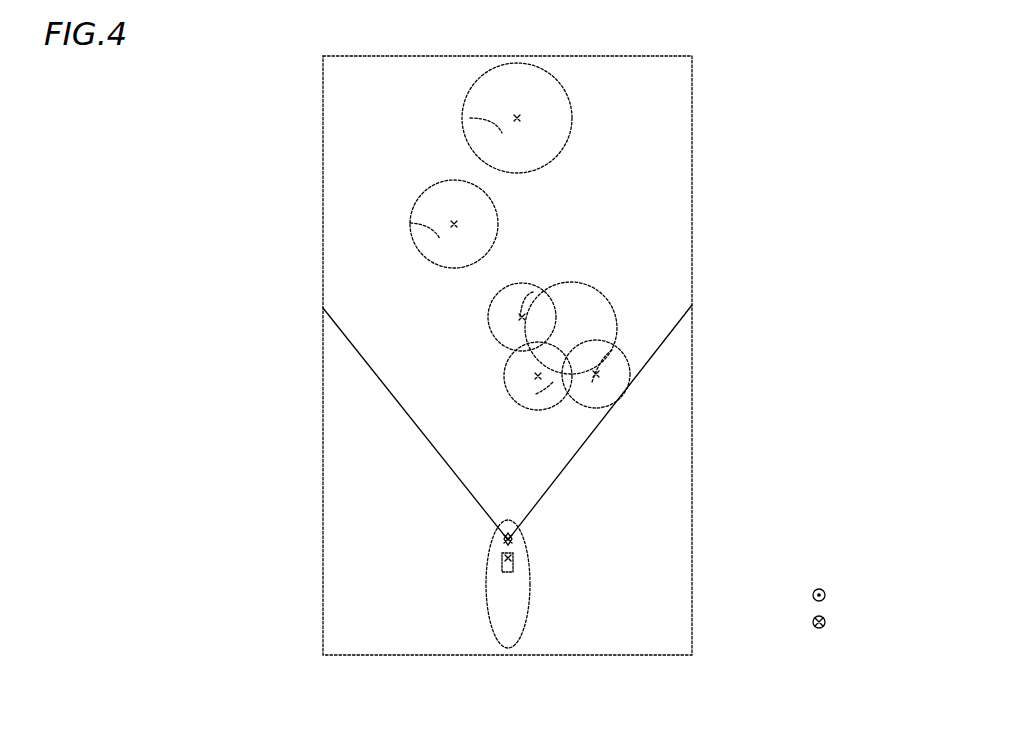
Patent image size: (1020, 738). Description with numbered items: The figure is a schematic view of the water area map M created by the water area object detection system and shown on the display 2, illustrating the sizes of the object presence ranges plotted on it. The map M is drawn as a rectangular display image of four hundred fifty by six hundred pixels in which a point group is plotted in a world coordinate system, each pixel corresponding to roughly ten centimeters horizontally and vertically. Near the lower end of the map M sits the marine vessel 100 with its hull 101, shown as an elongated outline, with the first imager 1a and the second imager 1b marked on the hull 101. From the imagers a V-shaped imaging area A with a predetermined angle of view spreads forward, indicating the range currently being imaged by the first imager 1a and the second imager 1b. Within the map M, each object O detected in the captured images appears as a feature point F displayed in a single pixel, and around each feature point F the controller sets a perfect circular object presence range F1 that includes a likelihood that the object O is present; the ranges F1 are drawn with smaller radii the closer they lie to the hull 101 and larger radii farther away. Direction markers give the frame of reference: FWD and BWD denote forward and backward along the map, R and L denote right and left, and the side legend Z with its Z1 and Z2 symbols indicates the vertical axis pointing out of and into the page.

The display 2 is at (692, 82).
The water area map M is at (306, 81).
The imaging area A is at (358, 308).
The object O is at (590, 288).
The feature point F is at (515, 116).
The object presence range F1 is at (470, 118).
The marine vessel 100 is at (457, 584).
The hull 101 is at (490, 615).
The first imager 1a is at (504, 541).
The second imager 1b is at (502, 561).
The right direction R is at (321, 424).
The left direction L is at (742, 424).
The backward direction BWD is at (507, 6).
The forward direction FWD is at (507, 662).
The vertical axis Z is at (846, 611).
The upward direction Z1 is at (832, 596).
The downward direction Z2 is at (832, 623).